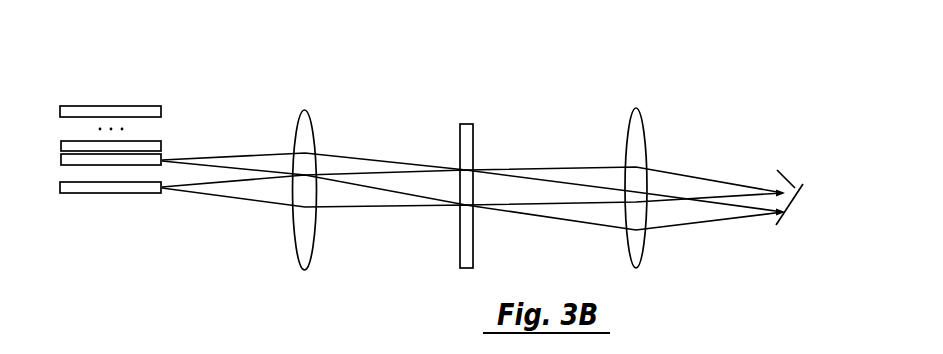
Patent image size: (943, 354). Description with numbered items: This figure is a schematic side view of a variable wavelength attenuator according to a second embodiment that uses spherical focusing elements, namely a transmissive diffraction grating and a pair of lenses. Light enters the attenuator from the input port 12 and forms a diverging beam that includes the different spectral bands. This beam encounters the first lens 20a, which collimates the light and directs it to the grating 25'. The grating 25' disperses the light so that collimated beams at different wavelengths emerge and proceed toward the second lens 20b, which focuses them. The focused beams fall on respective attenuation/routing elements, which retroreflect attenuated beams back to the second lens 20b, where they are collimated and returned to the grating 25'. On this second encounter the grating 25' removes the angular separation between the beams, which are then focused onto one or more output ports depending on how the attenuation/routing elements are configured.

The input port 12 is at (161, 193).
The first lens 20a is at (316, 145).
The transmissive diffraction grating 25' is at (496, 175).
The second lens 20b is at (647, 117).